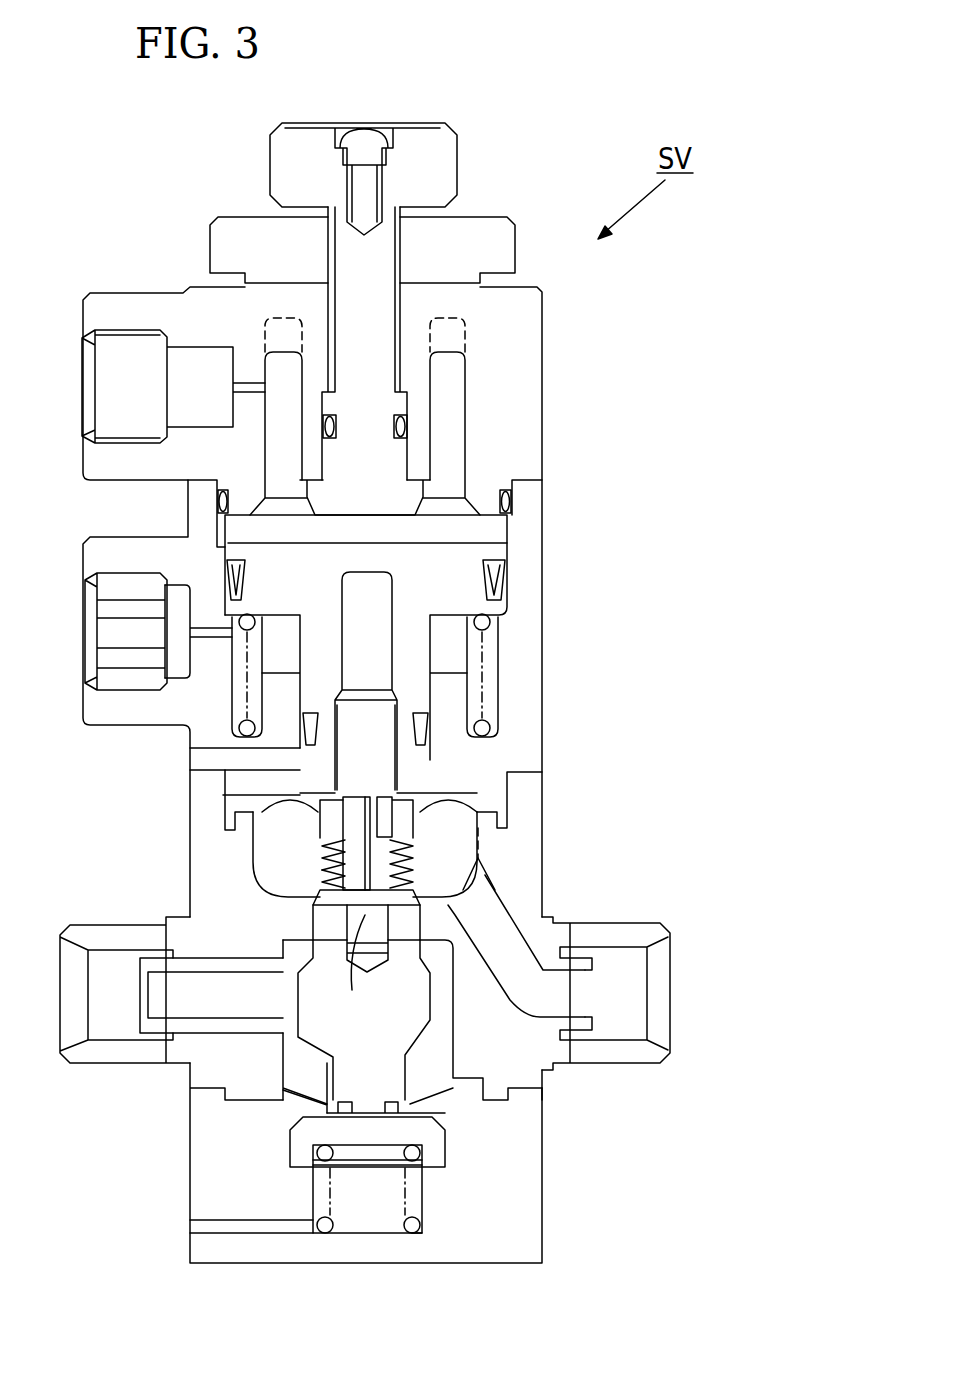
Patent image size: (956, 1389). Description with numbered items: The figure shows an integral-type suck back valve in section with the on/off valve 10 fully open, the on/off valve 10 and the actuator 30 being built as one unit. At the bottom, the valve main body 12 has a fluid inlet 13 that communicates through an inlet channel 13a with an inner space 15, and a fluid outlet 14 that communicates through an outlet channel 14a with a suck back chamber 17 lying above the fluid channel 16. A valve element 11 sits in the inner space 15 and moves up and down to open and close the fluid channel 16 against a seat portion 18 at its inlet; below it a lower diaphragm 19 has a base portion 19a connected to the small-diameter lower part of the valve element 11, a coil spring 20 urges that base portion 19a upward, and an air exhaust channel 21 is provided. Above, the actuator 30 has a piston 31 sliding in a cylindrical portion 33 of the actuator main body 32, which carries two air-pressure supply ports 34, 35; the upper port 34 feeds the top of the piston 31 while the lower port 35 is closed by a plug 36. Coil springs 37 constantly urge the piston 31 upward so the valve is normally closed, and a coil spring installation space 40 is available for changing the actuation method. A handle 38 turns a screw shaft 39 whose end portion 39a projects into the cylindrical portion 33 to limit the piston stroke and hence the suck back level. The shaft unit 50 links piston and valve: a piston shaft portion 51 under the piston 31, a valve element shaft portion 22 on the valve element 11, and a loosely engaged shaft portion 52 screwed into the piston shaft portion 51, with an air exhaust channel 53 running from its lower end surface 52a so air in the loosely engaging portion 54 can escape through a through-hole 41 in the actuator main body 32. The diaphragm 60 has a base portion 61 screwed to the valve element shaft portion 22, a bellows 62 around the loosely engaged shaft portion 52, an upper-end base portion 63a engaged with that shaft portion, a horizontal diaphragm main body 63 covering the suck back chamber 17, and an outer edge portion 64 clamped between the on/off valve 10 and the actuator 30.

The on/off valve 10 is at (550, 869).
The valve element 11 is at (345, 1028).
The valve main body 12 is at (545, 1085).
The fluid inlet 13 is at (75, 982).
The inlet channel 13a is at (150, 1000).
The fluid outlet 14 is at (650, 1000).
The outlet channel 14a is at (527, 993).
The inner space 15 is at (297, 1063).
The fluid channel 16 is at (417, 917).
The suck back chamber 17 is at (470, 825).
The seat portion 18 is at (300, 945).
The lower diaphragm 19 is at (437, 1092).
The base portion 19a is at (438, 1150).
The coil spring 20 is at (413, 1232).
The air exhaust channel 21 is at (263, 1228).
The valve element shaft portion 22 is at (325, 922).
The actuator 30 is at (550, 447).
The piston 31 is at (450, 553).
The actuator main body 32 is at (525, 585).
The cylindrical portion 33 is at (490, 524).
The air-pressure supply port 34 is at (105, 388).
The air-pressure supply port 35 is at (100, 668).
The plug 36 is at (105, 637).
The coil springs 37 is at (488, 624).
The handle 38 is at (445, 162).
The screw shaft 39 is at (385, 300).
The end portion 39a is at (348, 520).
The coil spring installation space 40 is at (286, 355).
The through-hole 41 is at (228, 745).
The shaft unit 50 is at (405, 762).
The piston shaft portion 51 is at (435, 685).
The loosely engaged shaft portion 52 is at (377, 838).
The lower end surface 52a is at (382, 905).
The air exhaust channel 53 is at (335, 832).
The loosely engaging portion 54 is at (330, 882).
The diaphragm 60 is at (462, 790).
The base portion 61 is at (347, 970).
The bellows 62 is at (410, 868).
The diaphragm main body 63 is at (263, 798).
The upper-end base portion 63a is at (297, 788).
The outer edge portion 64 is at (230, 807).